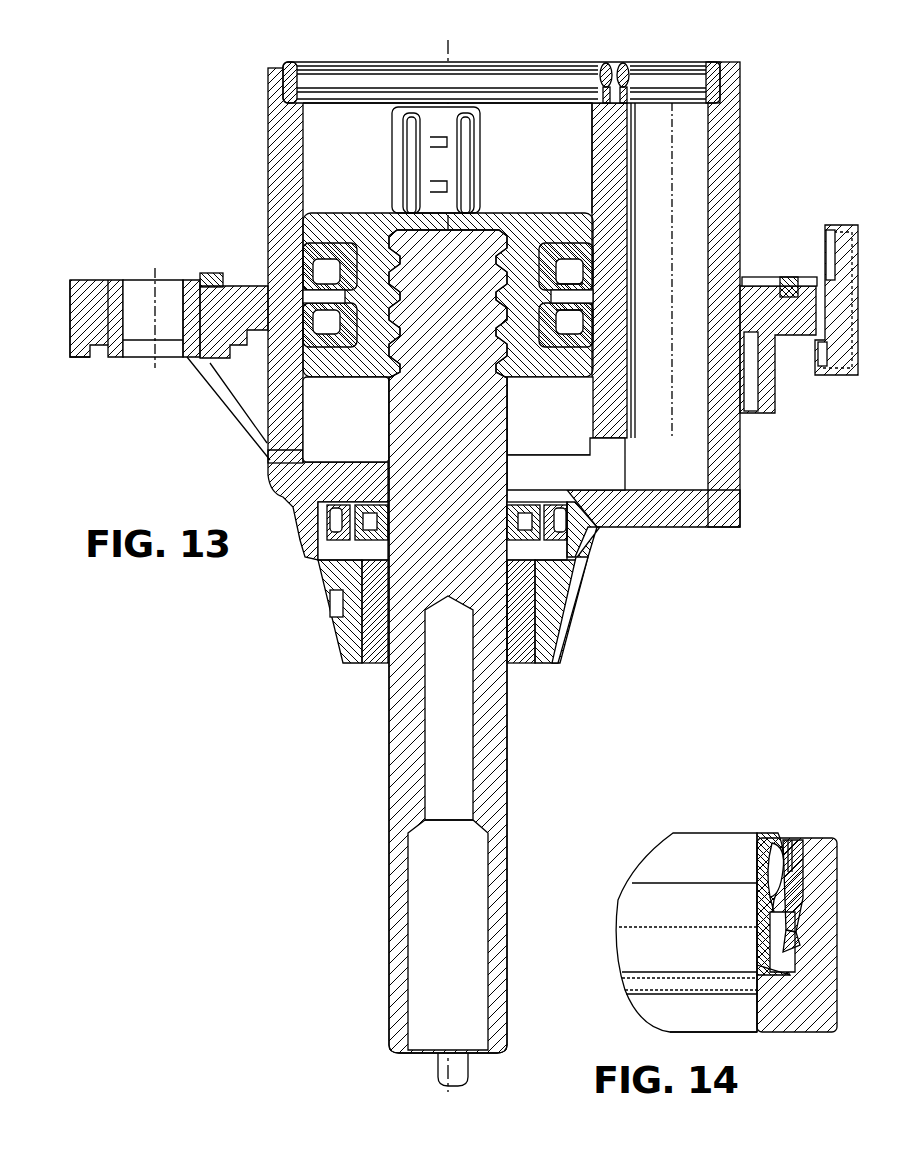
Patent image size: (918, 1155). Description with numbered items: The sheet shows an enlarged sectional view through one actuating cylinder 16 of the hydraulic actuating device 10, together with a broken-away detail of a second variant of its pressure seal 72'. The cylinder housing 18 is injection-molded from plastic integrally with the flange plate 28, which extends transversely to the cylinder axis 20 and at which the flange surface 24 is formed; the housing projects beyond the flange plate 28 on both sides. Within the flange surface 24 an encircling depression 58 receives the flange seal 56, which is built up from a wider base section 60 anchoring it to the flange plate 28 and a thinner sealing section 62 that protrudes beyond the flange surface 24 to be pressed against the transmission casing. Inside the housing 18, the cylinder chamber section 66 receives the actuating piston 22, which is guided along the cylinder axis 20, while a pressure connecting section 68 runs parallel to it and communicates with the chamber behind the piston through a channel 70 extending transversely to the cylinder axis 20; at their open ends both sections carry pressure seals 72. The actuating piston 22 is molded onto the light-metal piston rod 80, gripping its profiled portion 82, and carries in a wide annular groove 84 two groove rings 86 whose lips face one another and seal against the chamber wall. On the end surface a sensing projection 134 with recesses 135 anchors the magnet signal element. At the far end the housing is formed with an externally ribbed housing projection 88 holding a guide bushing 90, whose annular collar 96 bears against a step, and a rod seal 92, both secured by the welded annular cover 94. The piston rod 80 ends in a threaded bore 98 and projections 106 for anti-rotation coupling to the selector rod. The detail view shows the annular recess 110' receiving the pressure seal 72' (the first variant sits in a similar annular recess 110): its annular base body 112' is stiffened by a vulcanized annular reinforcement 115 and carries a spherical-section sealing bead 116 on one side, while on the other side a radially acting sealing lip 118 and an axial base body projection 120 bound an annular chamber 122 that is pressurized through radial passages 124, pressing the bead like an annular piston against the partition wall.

In FIG. 13, the hydraulic actuating device 10 is at (756, 159).
In FIG. 14, the hydraulic actuating device 10 is at (826, 834).
In FIG. 13, the actuating cylinder 16 is at (268, 470).
In FIG. 13, the cylinder housing 18 is at (268, 180).
In FIG. 14, the cylinder housing 18 is at (807, 992).
In FIG. 13, the cylinder axis 20 is at (448, 52).
In FIG. 13, the actuating piston 22 is at (370, 378).
In FIG. 13, the flange surface 24 is at (120, 280).
In FIG. 13, the flange plate 28 is at (80, 300).
In FIG. 13, the flange seal 56 is at (752, 284).
In FIG. 13, the encircling depression 58 is at (226, 287).
In FIG. 13, the base section 60 is at (790, 322).
In FIG. 13, the sealing section 62 is at (792, 278).
In FIG. 13, the cylinder chamber section 66 is at (447, 158).
In FIG. 14, the cylinder chamber section 66 is at (713, 1015).
In FIG. 13, the pressure connecting section 68 is at (657, 270).
In FIG. 13, the channel 70 is at (566, 464).
In FIG. 13, the pressure seal 72 is at (625, 125).
In FIG. 14, the pressure seal 72' is at (686, 912).
In FIG. 13, the piston rod 80 is at (393, 712).
In FIG. 13, the profiled portion 82 is at (510, 352).
In FIG. 13, the annular groove 84 is at (560, 306).
In FIG. 13, the groove ring 86 is at (560, 326).
In FIG. 13, the housing projection 88 is at (545, 614).
In FIG. 13, the guide bushing 90 is at (528, 665).
In FIG. 13, the rod seal 92 is at (378, 508).
In FIG. 13, the annular cover 94 is at (337, 505).
In FIG. 13, the annular collar 96 is at (322, 566).
In FIG. 13, the threaded bore 98 is at (449, 857).
In FIG. 13, the projection 106 is at (438, 1066).
In FIG. 13, the annular recess 110 is at (621, 61).
In FIG. 14, the annular recess 110' is at (837, 928).
In FIG. 14, the annular base body 112' is at (837, 886).
In FIG. 14, the annular reinforcement 115 is at (800, 866).
In FIG. 14, the sealing bead 116 is at (770, 834).
In FIG. 14, the sealing lip 118 is at (758, 914).
In FIG. 14, the base body projection 120 is at (770, 950).
In FIG. 14, the annular chamber 122 is at (770, 963).
In FIG. 14, the passage 124 is at (757, 998).
In FIG. 13, the sensing projection 134 is at (402, 124).
In FIG. 13, the recess 135 is at (430, 187).